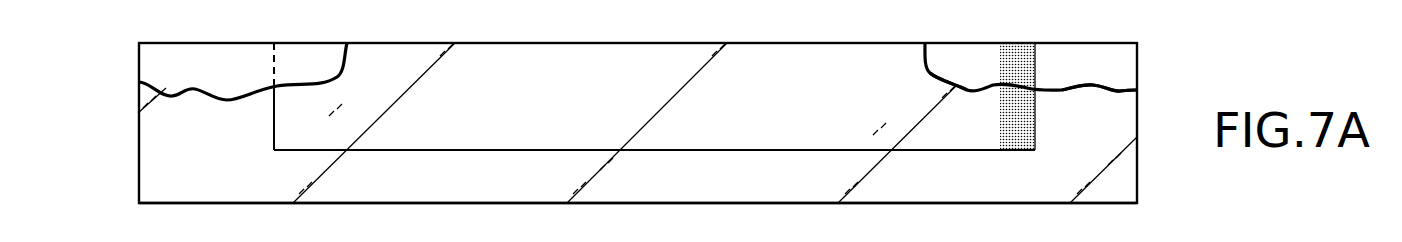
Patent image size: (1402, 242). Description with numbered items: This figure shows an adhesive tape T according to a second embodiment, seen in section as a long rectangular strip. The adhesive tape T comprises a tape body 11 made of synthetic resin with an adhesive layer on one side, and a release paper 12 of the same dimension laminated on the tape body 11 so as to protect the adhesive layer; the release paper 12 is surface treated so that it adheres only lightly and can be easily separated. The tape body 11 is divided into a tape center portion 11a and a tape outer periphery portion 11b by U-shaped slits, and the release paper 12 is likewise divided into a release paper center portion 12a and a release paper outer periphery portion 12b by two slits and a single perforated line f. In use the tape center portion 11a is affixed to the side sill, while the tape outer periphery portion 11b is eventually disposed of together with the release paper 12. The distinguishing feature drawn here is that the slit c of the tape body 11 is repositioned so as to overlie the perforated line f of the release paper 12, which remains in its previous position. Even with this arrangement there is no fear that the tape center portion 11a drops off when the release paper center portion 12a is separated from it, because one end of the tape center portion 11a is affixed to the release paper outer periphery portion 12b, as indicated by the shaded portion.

The adhesive tape T is at (126, 140).
The tape body 11 is at (415, 205).
The tape center portion 11a is at (325, 122).
The tape outer periphery portion 11b is at (625, 188).
The release paper 12 is at (1139, 58).
The release paper center portion 12a is at (953, 58).
The release paper outer periphery portion 12b is at (1113, 70).
The slit c is at (273, 118).
The perforated line f is at (273, 70).